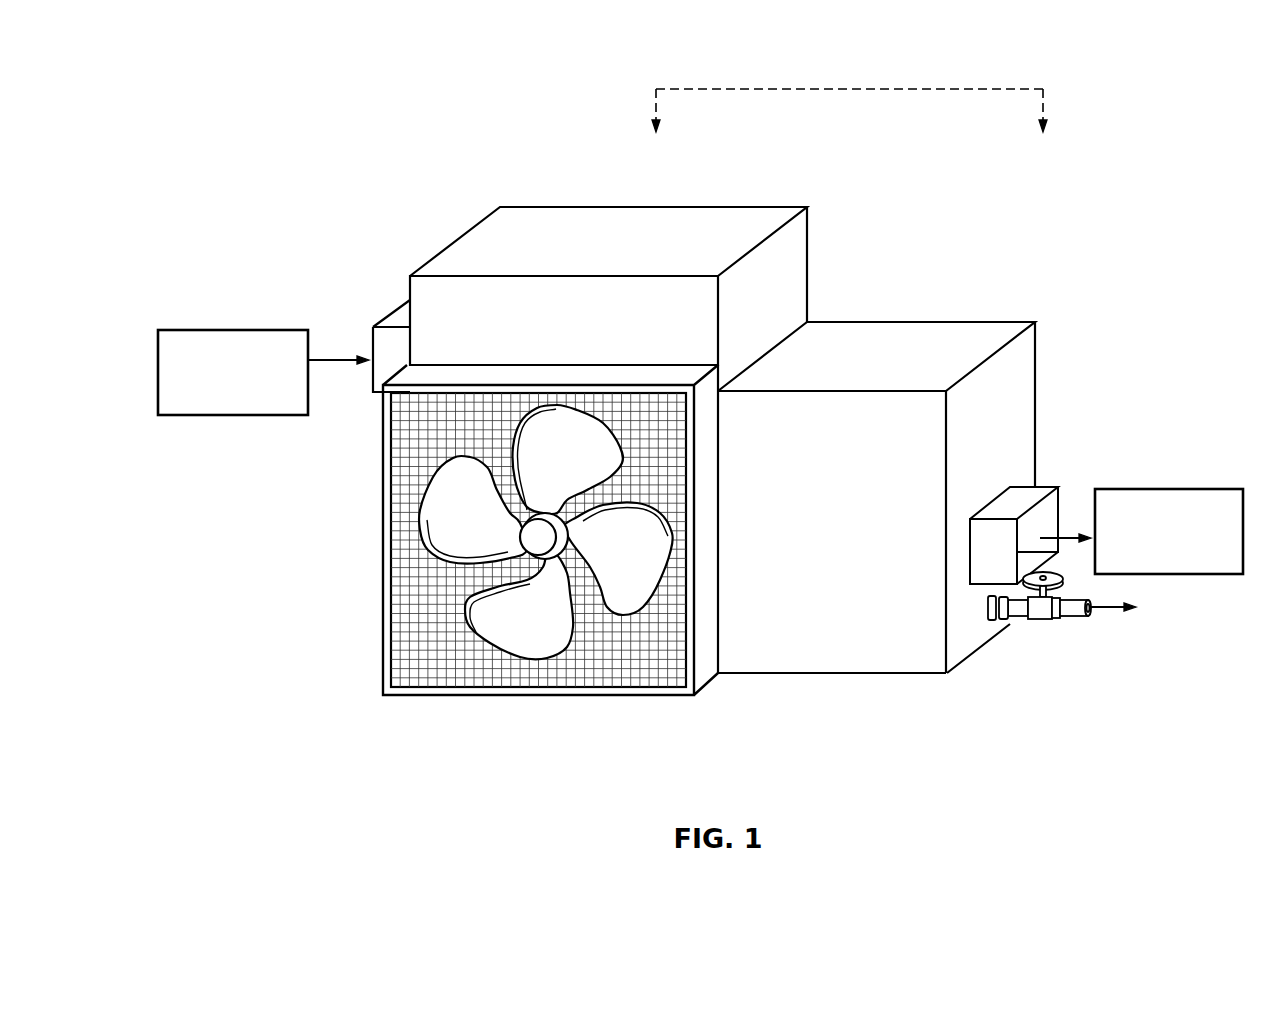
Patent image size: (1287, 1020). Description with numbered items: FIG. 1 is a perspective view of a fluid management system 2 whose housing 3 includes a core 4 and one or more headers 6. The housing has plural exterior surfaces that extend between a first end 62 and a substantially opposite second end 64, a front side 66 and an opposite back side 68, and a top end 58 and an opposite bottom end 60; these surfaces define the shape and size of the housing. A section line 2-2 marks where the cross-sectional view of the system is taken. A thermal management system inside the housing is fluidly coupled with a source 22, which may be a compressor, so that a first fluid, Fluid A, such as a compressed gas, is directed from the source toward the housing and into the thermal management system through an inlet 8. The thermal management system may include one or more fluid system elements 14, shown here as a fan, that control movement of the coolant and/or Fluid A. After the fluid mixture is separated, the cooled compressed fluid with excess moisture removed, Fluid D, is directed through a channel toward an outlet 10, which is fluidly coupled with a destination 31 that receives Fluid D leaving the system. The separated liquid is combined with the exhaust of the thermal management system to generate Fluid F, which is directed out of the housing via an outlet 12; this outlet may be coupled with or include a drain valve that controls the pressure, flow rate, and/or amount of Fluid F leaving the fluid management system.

The fluid management system 2 is at (425, 187).
The section line 2-2 is at (853, 89).
The housing 3 is at (798, 271).
The core 4 is at (542, 222).
The header 6 is at (948, 340).
The inlet 8 is at (400, 318).
The outlet 10 is at (1040, 496).
The outlet 12 is at (1068, 614).
The fluid system element 14 is at (382, 568).
The source 22 is at (233, 372).
The destination 31 is at (1169, 531).
The top end 58 is at (715, 196).
The bottom end 60 is at (742, 706).
The first end 62 is at (309, 484).
The second end 64 is at (1057, 416).
The front side 66 is at (416, 660).
The back side 68 is at (887, 318).
The Fluid A is at (325, 360).
The Fluid D is at (1063, 530).
The Fluid F is at (1103, 614).